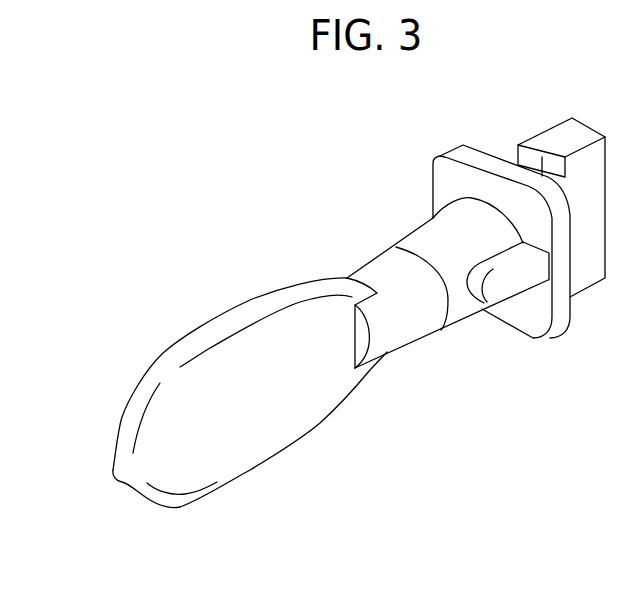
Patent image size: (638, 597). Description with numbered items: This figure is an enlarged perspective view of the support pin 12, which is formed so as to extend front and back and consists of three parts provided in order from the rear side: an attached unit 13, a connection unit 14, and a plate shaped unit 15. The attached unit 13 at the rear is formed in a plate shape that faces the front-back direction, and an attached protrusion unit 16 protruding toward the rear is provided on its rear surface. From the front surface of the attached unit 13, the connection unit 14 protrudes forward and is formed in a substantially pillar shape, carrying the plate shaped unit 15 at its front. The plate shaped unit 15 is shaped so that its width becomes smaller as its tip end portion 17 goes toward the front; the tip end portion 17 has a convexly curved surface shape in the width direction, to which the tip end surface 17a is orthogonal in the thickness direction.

The support pin 12 is at (145, 160).
The attached unit 13 is at (467, 149).
The connection unit 14 is at (433, 237).
The plate shaped unit 15 is at (243, 314).
The attached protrusion unit 16 is at (557, 132).
The tip end portion 17 is at (150, 495).
The tip end surface 17a is at (127, 430).